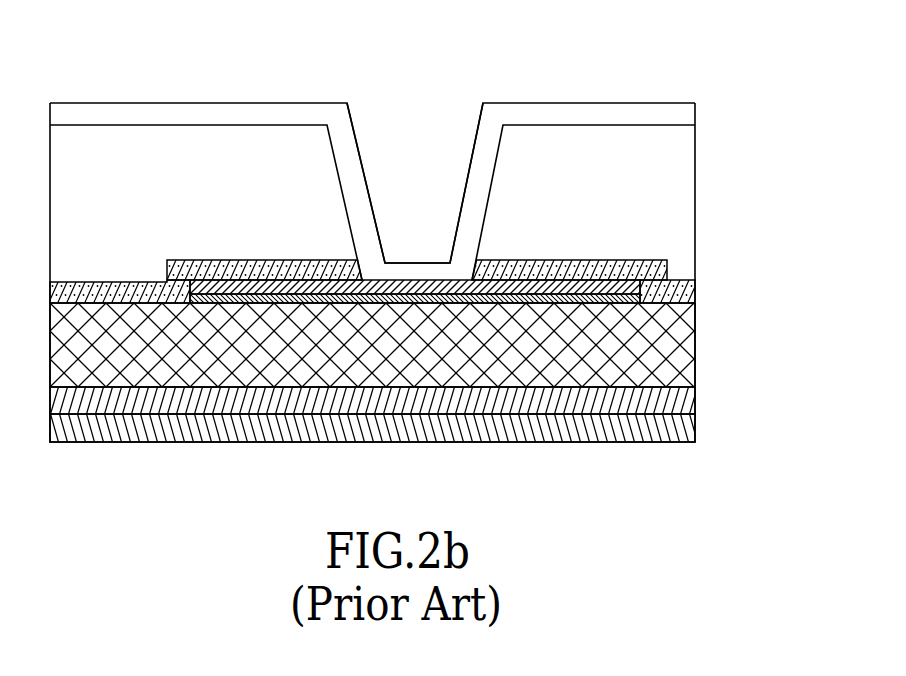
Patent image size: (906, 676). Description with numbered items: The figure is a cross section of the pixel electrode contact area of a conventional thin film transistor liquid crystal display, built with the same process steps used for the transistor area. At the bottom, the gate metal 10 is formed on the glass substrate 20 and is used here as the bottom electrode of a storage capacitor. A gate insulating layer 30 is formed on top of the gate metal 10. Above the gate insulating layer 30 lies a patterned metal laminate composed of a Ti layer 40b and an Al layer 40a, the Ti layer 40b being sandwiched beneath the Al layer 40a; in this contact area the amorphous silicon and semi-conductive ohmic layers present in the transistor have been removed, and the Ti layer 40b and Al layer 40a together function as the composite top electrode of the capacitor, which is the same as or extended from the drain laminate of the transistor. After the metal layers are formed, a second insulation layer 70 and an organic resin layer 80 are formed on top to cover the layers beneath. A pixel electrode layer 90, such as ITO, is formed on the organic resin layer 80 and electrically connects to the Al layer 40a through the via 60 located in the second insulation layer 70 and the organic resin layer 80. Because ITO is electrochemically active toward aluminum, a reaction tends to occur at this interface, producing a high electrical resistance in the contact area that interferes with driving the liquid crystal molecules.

The gate metal 10 is at (688, 397).
The glass substrate 20 is at (685, 431).
The gate insulating layer 30 is at (680, 341).
The Al layer 40a is at (667, 278).
The Ti layer 40b is at (693, 296).
The via 60 is at (410, 133).
The second insulation layer 70 is at (622, 258).
The organic resin layer 80 is at (683, 178).
The pixel electrode layer 90 is at (651, 103).